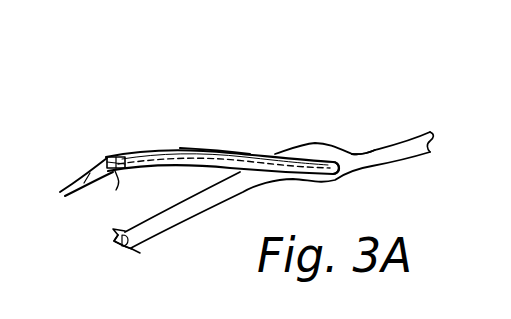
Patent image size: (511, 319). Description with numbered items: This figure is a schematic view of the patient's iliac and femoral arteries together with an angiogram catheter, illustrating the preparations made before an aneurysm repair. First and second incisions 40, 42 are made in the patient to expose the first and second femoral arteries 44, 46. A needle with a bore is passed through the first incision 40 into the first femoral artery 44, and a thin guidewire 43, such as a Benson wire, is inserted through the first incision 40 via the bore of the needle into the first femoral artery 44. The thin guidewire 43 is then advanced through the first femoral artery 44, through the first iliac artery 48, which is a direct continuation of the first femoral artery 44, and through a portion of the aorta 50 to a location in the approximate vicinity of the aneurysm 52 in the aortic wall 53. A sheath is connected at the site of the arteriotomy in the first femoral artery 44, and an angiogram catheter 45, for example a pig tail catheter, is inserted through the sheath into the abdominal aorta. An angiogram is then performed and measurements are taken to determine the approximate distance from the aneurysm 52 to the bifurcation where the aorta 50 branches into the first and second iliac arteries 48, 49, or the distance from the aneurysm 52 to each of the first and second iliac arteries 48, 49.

The first incision 40 is at (124, 153).
The second incision 42 is at (140, 253).
The thin guidewire 43 is at (83, 173).
The first femoral artery 44 is at (113, 157).
The angiogram catheter 45 is at (333, 173).
The second femoral artery 46 is at (115, 232).
The first iliac artery 48 is at (231, 153).
The second iliac artery 49 is at (238, 187).
The aorta 50 is at (288, 154).
The aneurysm 52 is at (328, 145).
The aortic wall 53 is at (370, 151).